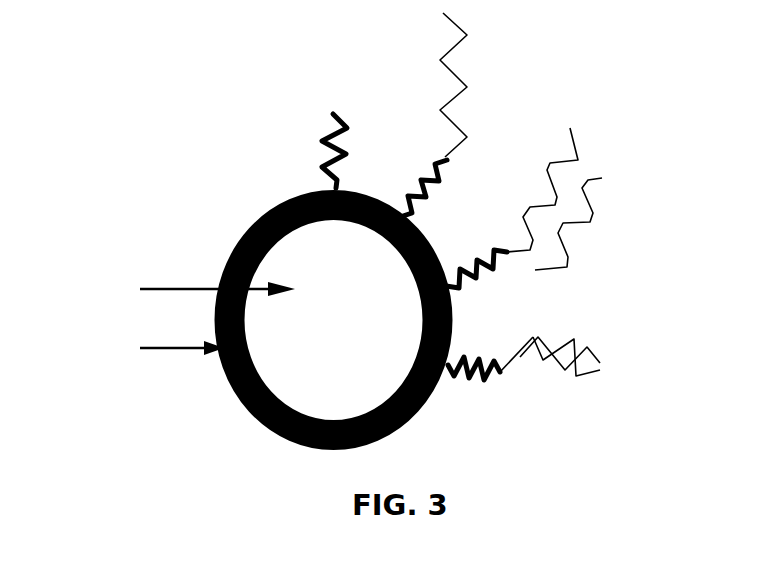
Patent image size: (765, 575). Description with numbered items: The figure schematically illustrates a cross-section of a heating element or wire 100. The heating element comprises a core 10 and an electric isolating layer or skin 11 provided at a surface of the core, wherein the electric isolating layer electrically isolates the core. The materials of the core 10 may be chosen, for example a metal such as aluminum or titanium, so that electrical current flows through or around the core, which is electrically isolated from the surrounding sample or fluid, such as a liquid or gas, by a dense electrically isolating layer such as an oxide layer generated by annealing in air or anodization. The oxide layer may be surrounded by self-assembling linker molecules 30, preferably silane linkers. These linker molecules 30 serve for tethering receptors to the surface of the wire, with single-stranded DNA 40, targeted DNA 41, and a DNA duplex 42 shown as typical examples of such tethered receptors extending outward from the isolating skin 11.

The heating element or wire 100 is at (283, 299).
The core 10 is at (185, 273).
The electric isolating layer or skin 11 is at (149, 334).
The self-assembling linker molecules 30 is at (306, 135).
The single-stranded DNA 40 is at (468, 90).
The targeted DNA 41 is at (604, 172).
The DNA duplex 42 is at (545, 358).